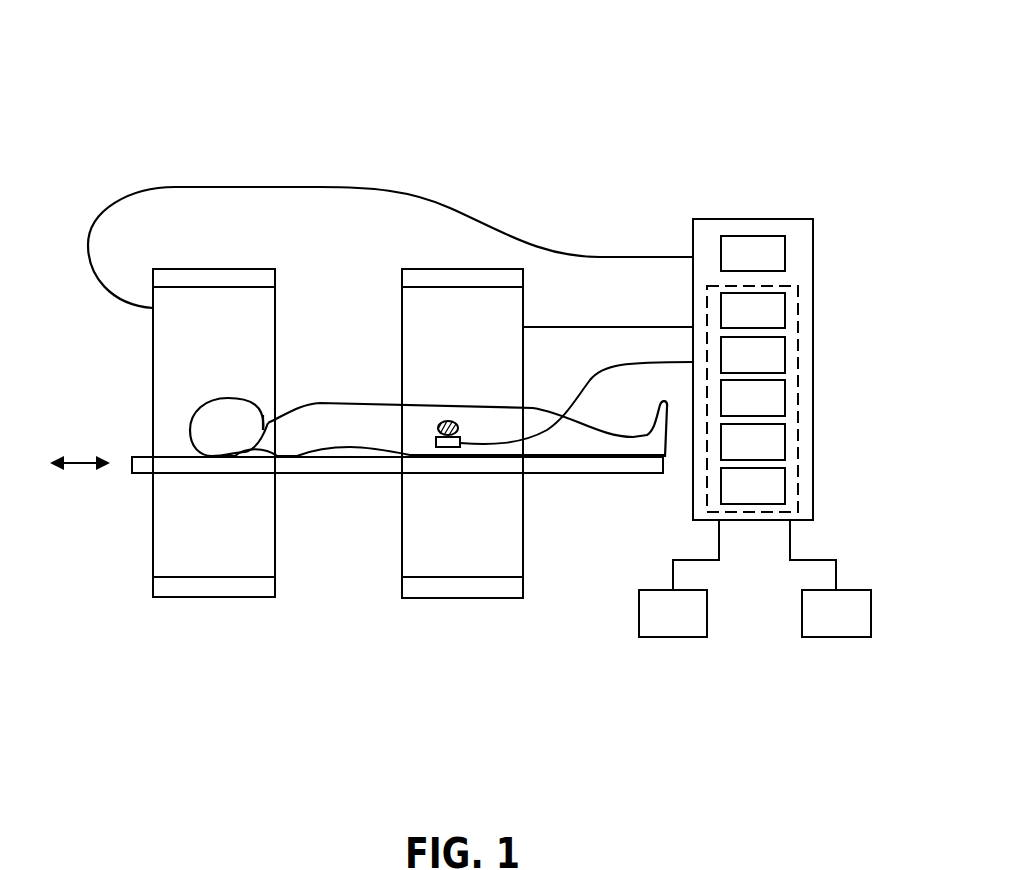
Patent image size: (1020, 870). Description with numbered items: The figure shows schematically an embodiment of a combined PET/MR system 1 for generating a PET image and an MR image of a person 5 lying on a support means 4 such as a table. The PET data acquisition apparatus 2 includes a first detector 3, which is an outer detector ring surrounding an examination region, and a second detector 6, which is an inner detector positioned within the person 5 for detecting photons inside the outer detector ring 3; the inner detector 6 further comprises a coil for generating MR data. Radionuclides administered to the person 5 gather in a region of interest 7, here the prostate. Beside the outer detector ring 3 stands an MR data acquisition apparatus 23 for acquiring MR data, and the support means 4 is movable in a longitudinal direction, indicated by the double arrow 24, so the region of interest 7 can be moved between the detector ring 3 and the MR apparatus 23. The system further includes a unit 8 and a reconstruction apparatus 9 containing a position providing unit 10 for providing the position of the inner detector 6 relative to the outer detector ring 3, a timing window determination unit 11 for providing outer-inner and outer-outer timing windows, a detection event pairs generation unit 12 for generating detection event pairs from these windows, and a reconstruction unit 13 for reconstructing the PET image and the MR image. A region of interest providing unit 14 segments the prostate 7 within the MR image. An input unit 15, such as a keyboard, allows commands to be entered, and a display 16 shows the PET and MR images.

The PET/MR system 1 is at (582, 130).
The PET data acquisition apparatus 2 is at (370, 548).
The first detector 3 is at (523, 535).
The support means 4 is at (173, 473).
The person 5 is at (329, 392).
The second detector 6 is at (436, 441).
The region of interest 7 is at (450, 418).
The control unit 8 is at (785, 238).
The reconstruction apparatus 9 is at (798, 292).
The position providing unit 10 is at (785, 313).
The timing window determination unit 11 is at (785, 357).
The detection event pairs generation unit 12 is at (785, 400).
The reconstruction unit 13 is at (785, 444).
The region of interest providing unit 14 is at (785, 488).
The input unit 15 is at (680, 637).
The display 16 is at (837, 637).
The MR data acquisition apparatus 23 is at (153, 553).
The double arrow 24 is at (80, 455).